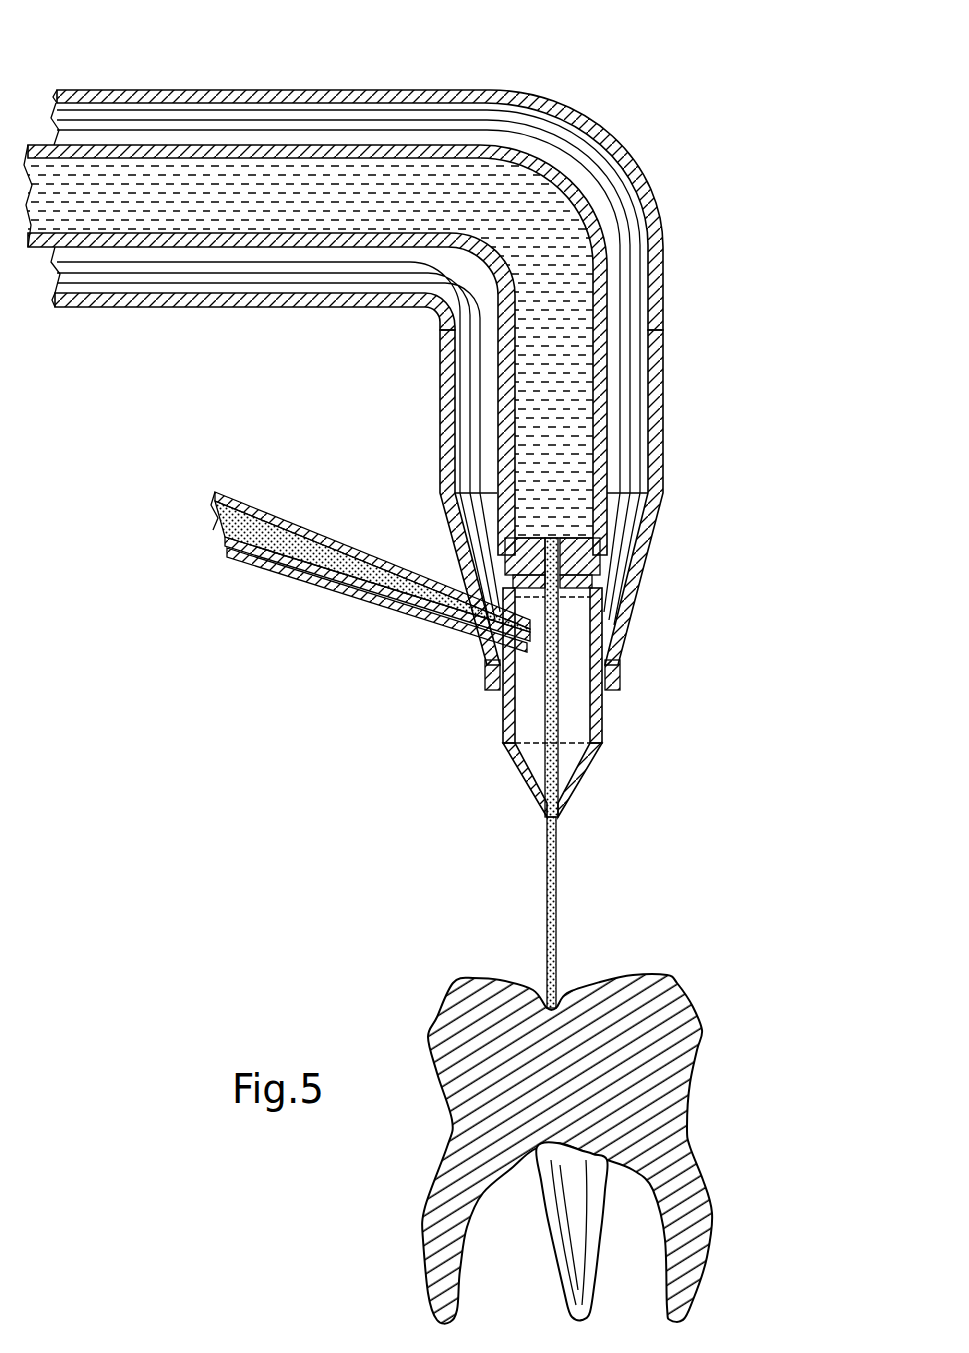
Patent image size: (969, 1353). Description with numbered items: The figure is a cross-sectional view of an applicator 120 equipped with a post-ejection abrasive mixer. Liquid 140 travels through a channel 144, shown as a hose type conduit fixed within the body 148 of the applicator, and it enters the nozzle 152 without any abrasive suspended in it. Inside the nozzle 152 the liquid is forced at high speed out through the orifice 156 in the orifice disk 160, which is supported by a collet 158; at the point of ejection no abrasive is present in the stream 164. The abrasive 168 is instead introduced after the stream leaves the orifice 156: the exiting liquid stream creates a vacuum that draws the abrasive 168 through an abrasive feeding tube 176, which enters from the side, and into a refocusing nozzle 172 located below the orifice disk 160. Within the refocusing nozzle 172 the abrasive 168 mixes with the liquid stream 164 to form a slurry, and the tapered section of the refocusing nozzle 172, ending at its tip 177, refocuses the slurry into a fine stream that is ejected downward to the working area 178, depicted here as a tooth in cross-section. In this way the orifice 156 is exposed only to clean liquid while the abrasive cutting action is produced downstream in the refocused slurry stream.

The applicator 120 is at (646, 77).
The liquid 140 is at (258, 195).
The channel 144 is at (240, 247).
The body 148 is at (465, 90).
The nozzle 152 is at (660, 463).
The orifice 156 is at (604, 568).
The collet 158 is at (586, 583).
The orifice disk 160 is at (613, 645).
The stream 164 is at (553, 727).
The abrasive 168 is at (540, 635).
The refocusing nozzle 172 is at (513, 780).
The abrasive feeding tube 176 is at (299, 525).
The nozzle tip 177 is at (563, 797).
The working area 178 is at (565, 985).